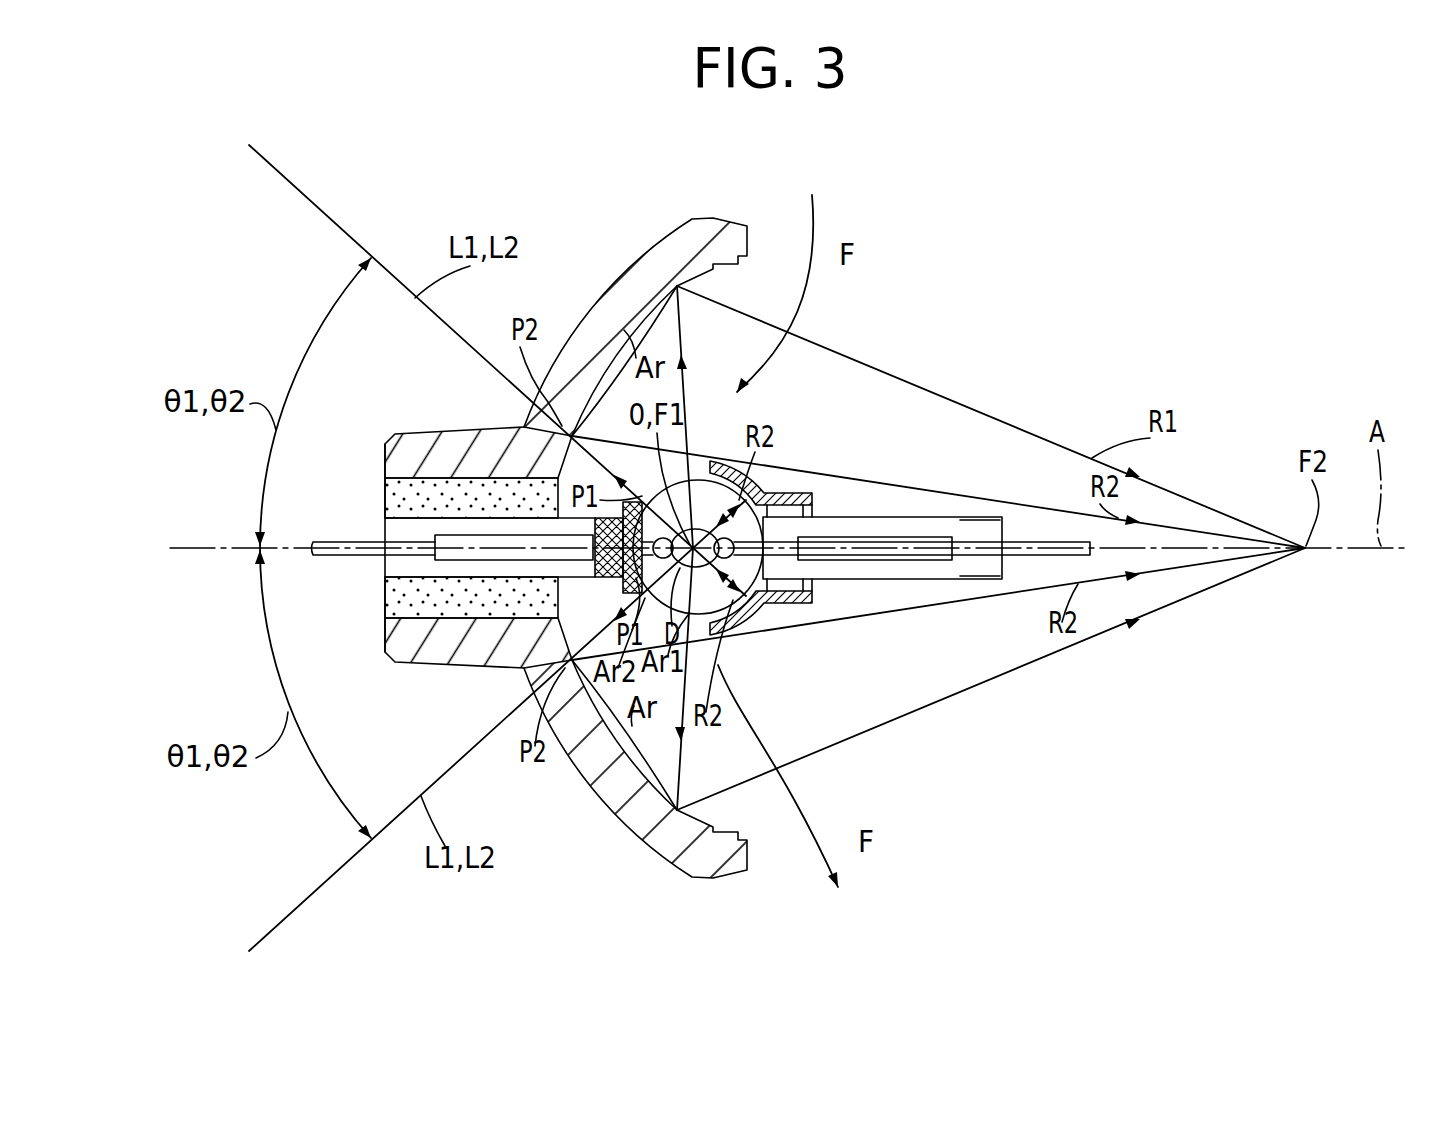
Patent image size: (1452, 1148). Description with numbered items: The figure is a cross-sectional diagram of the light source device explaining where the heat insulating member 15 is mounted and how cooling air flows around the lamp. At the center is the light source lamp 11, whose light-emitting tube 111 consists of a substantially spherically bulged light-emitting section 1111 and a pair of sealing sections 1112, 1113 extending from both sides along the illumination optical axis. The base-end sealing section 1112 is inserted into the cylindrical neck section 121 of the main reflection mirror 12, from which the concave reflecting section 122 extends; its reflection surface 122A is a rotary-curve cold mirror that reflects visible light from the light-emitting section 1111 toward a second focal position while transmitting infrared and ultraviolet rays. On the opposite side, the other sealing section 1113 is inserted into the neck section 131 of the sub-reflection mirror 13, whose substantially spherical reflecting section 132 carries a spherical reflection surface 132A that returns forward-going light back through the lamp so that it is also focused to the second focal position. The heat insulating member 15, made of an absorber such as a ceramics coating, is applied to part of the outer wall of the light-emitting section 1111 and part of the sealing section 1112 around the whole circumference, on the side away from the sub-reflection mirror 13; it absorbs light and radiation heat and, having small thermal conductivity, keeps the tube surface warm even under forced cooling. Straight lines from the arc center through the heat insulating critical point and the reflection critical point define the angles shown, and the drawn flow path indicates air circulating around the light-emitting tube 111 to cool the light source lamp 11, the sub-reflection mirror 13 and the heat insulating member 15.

The light source lamp 11 is at (701, 495).
The main reflection mirror 12 is at (645, 506).
The sub-reflection mirror 13 is at (812, 544).
The heat insulating member 15 is at (625, 578).
The light-emitting tube 111 is at (983, 580).
The neck section 121 is at (408, 437).
The reflecting section 122 is at (674, 242).
The reflection surface 122A is at (630, 330).
The neck section 131 is at (808, 494).
The reflecting section 132 is at (750, 624).
The reflection surface 132A is at (798, 600).
The light-emitting section 1111 is at (718, 478).
The sealing section 1112 is at (395, 565).
The sealing section 1113 is at (992, 526).